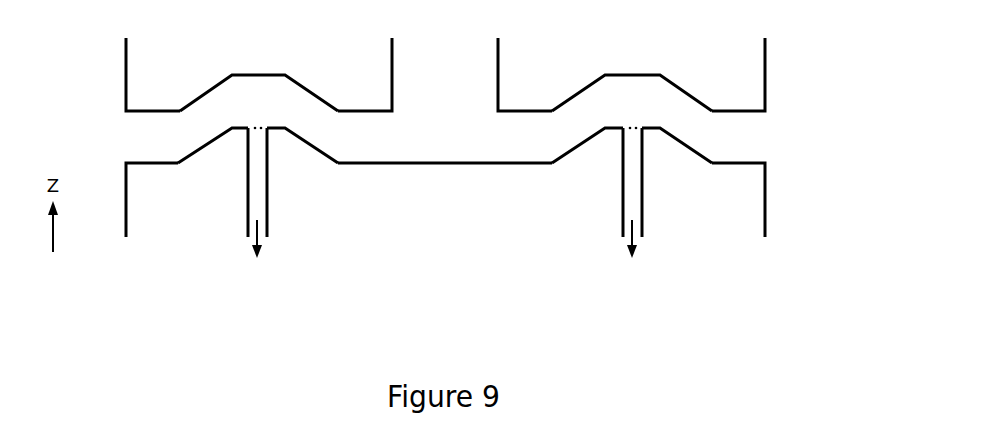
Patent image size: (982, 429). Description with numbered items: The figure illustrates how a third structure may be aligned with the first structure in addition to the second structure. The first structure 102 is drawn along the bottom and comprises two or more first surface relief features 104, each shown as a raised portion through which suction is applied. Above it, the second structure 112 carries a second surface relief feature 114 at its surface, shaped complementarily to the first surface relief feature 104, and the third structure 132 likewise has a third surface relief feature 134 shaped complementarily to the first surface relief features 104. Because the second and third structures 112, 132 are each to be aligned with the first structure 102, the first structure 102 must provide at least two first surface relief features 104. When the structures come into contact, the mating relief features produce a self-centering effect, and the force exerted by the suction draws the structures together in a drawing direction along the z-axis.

The first structure 102 is at (445, 207).
The first surface relief feature 104 is at (198, 153).
The second structure 112 is at (211, 64).
The second surface relief feature 114 is at (303, 83).
The third structure 132 is at (676, 67).
The third surface relief feature 134 is at (585, 87).